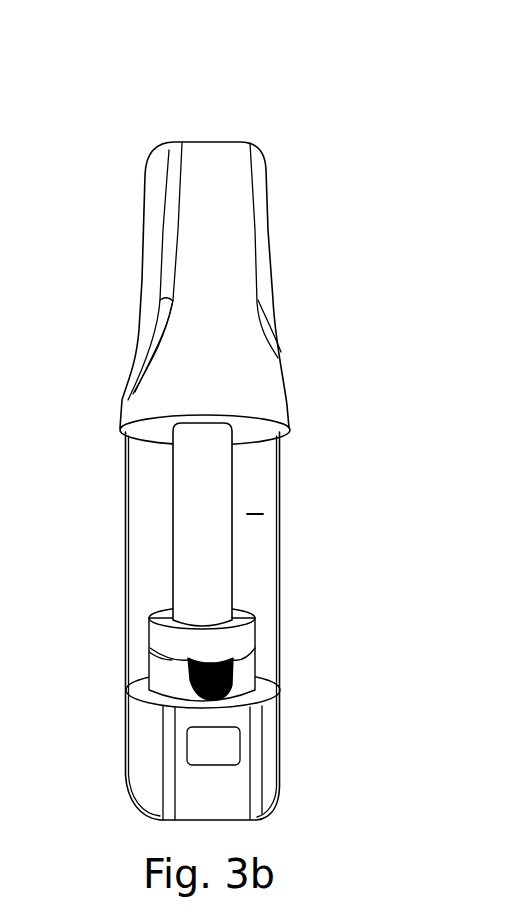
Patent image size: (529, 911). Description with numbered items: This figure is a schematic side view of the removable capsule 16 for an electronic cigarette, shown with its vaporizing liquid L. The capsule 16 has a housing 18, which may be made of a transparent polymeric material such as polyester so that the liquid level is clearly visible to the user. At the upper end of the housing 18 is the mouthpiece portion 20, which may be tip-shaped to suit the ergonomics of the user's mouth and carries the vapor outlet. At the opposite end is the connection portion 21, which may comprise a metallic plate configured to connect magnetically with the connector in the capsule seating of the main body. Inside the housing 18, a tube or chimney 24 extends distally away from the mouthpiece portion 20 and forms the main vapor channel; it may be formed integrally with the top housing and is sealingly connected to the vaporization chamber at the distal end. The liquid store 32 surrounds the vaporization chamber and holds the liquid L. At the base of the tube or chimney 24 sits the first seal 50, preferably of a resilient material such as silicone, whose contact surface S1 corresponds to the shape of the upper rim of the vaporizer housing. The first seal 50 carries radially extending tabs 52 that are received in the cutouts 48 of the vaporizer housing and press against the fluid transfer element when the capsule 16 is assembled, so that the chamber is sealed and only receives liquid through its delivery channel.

The capsule 16 is at (193, 92).
The mouthpiece portion 20 is at (218, 185).
The housing 18 is at (277, 567).
The liquid store 32 is at (265, 467).
The tube or chimney 24 is at (198, 513).
The first seal 50 is at (168, 640).
The radially extending tabs 52 is at (208, 665).
The cutouts 48 is at (233, 690).
The connection portion 21 is at (240, 820).
The contact surface S1 is at (157, 657).